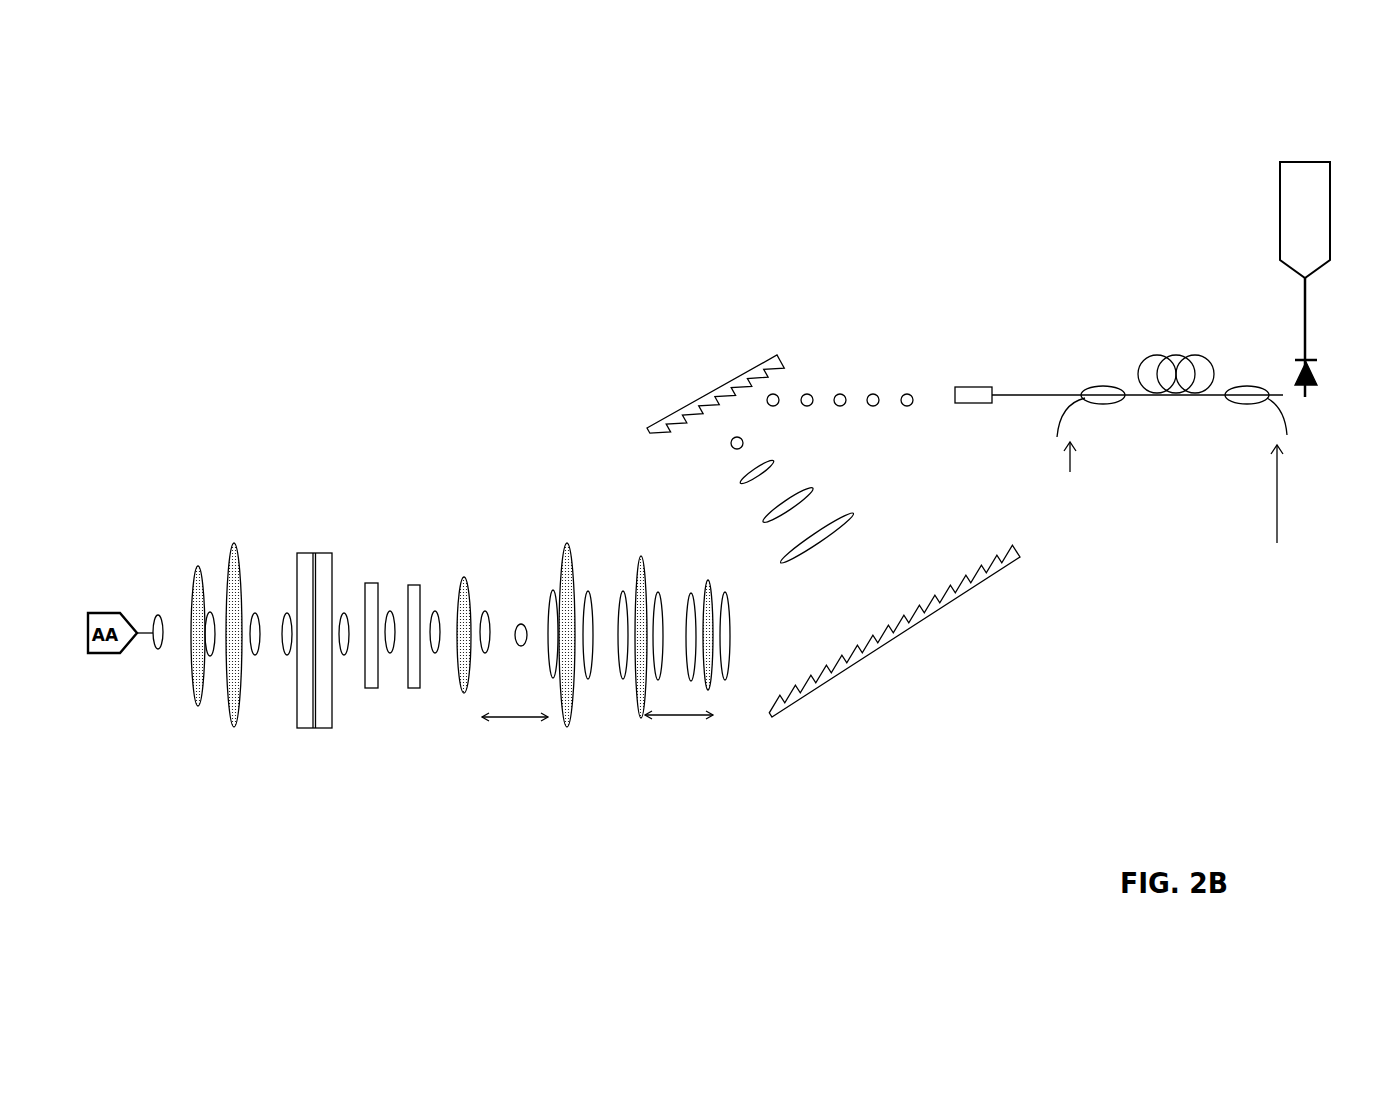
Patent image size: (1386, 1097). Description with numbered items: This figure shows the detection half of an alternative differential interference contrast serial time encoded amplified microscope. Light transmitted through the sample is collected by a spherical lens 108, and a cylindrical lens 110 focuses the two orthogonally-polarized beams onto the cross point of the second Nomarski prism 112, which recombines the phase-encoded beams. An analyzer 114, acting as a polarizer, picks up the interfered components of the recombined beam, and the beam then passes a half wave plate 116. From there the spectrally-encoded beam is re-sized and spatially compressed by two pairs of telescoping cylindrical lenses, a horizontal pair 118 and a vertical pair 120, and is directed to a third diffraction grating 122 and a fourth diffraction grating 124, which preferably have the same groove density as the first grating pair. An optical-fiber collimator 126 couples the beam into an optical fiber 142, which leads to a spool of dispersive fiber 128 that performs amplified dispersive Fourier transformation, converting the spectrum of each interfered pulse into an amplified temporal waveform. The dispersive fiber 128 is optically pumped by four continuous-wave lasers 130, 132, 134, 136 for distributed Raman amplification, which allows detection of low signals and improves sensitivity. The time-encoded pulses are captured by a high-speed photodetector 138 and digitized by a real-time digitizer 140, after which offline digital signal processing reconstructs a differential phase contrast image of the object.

The spherical lens 108 is at (158, 512).
The cylindrical lens 110 is at (230, 788).
The second Nomarski prism 112 is at (320, 497).
The analyzer 114 is at (368, 728).
The half wave plate 116 is at (402, 547).
The horizontal cylindrical lens pair 118 is at (525, 852).
The vertical cylindrical lens pair 120 is at (697, 843).
The third diffraction grating 122 is at (977, 588).
The fourth diffraction grating 124 is at (775, 357).
The optical-fiber collimator 126 is at (970, 327).
The dispersive fiber 128 is at (1173, 275).
The continuous-wave laser 130 is at (1133, 500).
The continuous-wave laser 132 is at (1033, 532).
The continuous-wave laser 134 is at (1340, 603).
The continuous-wave laser 136 is at (1232, 602).
The high-speed photodetector 138 is at (1330, 458).
The real-time digitizer 140 is at (1280, 190).
The optical fiber 142 is at (1033, 395).